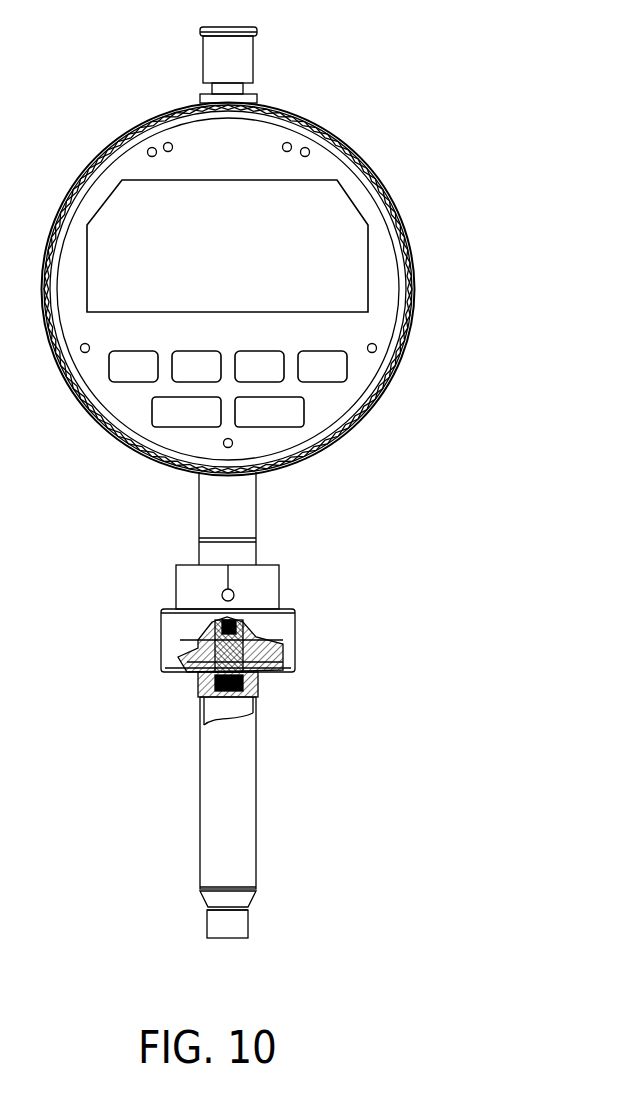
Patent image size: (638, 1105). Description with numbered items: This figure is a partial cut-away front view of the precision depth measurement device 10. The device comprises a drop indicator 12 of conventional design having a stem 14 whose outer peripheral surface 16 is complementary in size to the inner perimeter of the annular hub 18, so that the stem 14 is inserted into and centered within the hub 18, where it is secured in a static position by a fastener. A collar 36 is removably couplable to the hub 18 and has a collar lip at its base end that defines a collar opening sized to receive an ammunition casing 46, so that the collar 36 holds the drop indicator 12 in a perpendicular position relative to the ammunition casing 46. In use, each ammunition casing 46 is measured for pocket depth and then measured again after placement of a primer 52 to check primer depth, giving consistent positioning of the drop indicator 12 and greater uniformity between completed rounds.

The precision depth measurement device 10 is at (487, 108).
The drop indicator 12 is at (295, 110).
The stem 14 is at (200, 648).
The outer peripheral surface 16 is at (202, 680).
The hub 18 is at (280, 583).
The collar 36 is at (295, 650).
The ammunition casing 46 is at (257, 813).
The primer 52 is at (217, 697).